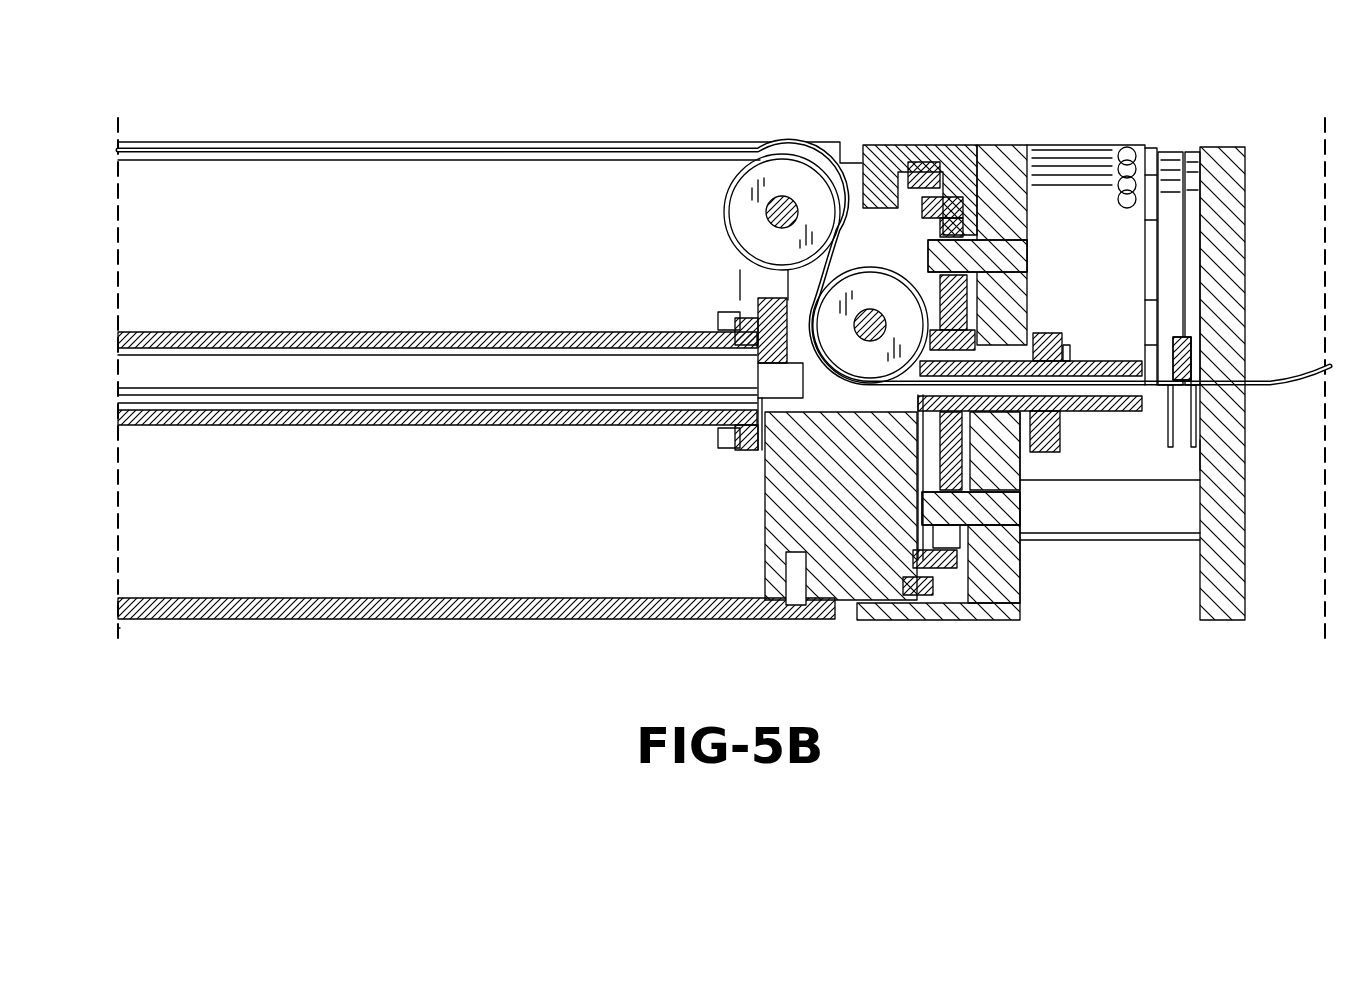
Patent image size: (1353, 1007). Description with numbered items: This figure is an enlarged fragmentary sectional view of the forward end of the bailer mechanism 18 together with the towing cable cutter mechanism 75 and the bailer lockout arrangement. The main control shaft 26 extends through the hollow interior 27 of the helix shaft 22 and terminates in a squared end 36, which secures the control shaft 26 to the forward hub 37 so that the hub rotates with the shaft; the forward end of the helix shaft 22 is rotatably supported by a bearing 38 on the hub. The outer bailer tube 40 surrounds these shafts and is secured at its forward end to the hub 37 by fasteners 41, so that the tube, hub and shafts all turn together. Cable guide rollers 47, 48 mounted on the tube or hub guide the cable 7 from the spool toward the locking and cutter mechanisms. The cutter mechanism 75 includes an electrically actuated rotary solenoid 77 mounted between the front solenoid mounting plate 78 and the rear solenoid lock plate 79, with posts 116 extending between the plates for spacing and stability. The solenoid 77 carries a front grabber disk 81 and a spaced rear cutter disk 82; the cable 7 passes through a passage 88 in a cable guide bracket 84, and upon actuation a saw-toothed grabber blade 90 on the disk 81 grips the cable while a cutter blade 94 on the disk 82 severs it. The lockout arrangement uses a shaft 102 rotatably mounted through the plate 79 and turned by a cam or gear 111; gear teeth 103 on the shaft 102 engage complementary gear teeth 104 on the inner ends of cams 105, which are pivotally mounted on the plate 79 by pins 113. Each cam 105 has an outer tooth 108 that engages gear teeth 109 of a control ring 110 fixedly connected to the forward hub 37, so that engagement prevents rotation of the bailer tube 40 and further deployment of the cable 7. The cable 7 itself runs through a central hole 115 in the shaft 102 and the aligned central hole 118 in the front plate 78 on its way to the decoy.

The cable 7 is at (520, 148).
The bailer mechanism 18 is at (265, 630).
The helix shaft 22 is at (242, 427).
The main control shaft 26 is at (170, 378).
The hollow interior 27 is at (208, 357).
The squared end 36 is at (775, 398).
The forward hub 37 is at (745, 572).
The flange 38 is at (762, 318).
The outer bailer tube 40 is at (410, 621).
The fasteners 41 is at (796, 620).
The cable guide roller 47 is at (740, 212).
The cable guide roller 48 is at (876, 296).
The cutter mechanism 75 is at (1094, 146).
The rotary solenoid 77 is at (1046, 146).
The front solenoid mounting plate 78 is at (1230, 620).
The rear solenoid lock plate 79 is at (990, 622).
The front grabber disk 81 is at (1190, 150).
The rear cutter disk 82 is at (1165, 150).
The cable guide bracket 84 is at (1183, 348).
The passage 88 is at (1190, 382).
The grabber blade 90 is at (1185, 470).
The cutter blade 94 is at (1158, 450).
The shaft 102 is at (1100, 412).
The gear teeth 103 is at (1022, 572).
The gear teeth 104 is at (945, 446).
The cams 105 is at (962, 312).
The tooth 108 is at (962, 215).
The gear teeth 109 is at (905, 586).
The control ring 110 is at (935, 568).
The cam or gear 111 is at (1040, 453).
The pins 113 is at (1030, 262).
The central hole 115 is at (1093, 364).
The posts 116 is at (1185, 522).
The central hole 118 is at (1222, 420).